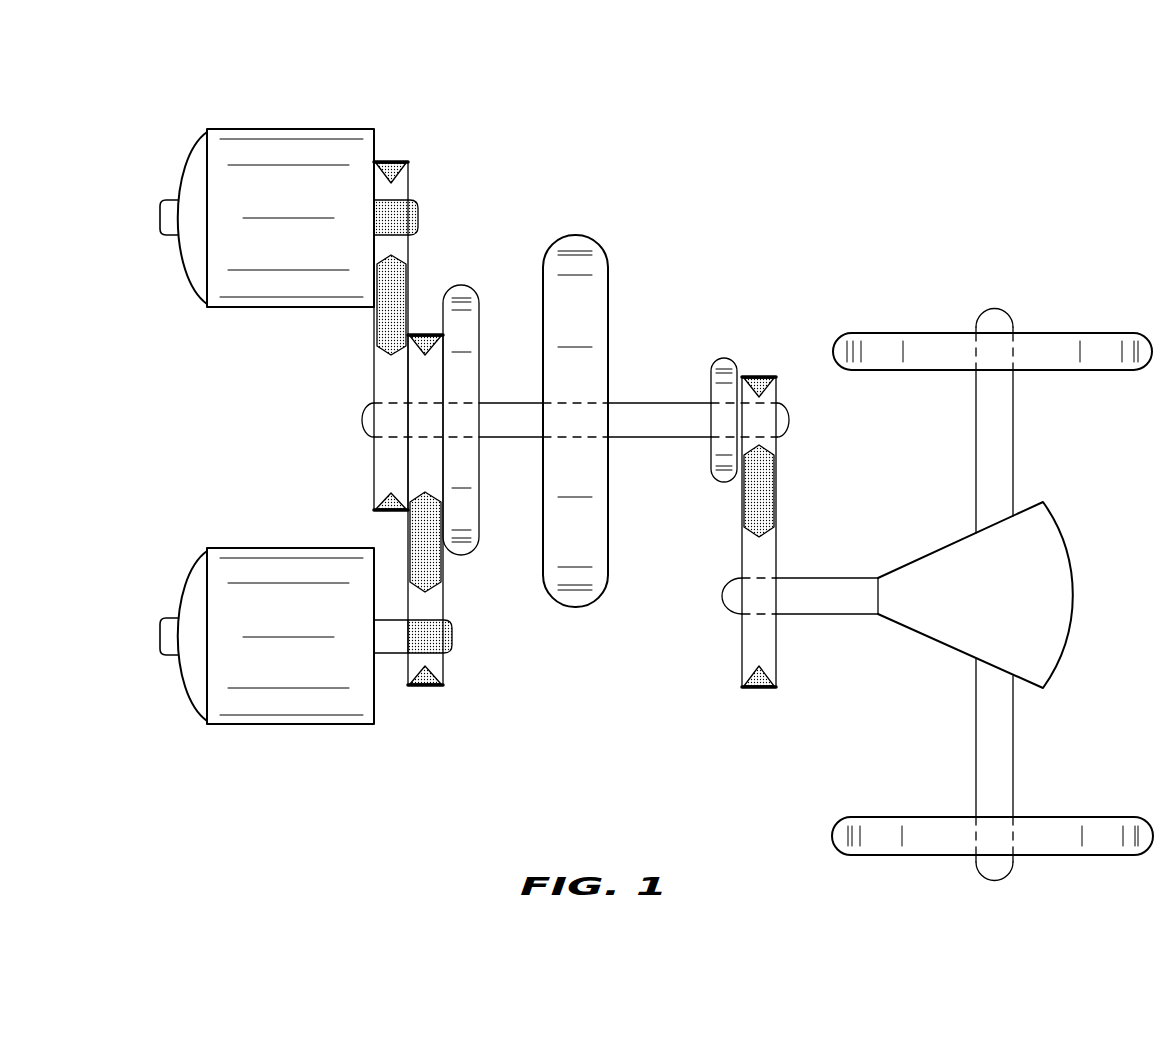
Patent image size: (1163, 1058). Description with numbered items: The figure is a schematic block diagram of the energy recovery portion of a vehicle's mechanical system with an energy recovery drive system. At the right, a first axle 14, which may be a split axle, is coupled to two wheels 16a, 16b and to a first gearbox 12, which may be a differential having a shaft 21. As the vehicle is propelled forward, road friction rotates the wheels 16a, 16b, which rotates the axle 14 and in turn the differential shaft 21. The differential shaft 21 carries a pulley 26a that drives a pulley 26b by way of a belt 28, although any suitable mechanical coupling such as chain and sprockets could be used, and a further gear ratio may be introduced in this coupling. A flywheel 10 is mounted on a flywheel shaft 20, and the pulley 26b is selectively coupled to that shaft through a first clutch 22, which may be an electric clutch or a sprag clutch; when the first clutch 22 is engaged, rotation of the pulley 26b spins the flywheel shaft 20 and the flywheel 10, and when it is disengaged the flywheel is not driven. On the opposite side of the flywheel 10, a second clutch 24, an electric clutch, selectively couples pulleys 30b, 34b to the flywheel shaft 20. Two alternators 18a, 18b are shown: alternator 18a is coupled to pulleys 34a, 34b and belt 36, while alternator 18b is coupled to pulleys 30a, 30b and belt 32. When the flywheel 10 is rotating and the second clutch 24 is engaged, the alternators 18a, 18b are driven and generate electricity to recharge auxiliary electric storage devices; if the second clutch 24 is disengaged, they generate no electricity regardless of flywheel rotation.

The flywheel 10 is at (605, 251).
The first gearbox 12 is at (1060, 593).
The first axle 14 is at (1013, 435).
The wheel 16a is at (1068, 337).
The wheel 16b is at (1070, 817).
The alternator 18a is at (273, 128).
The alternator 18b is at (322, 724).
The flywheel shaft 20 is at (642, 403).
The differential shaft 21 is at (830, 607).
The first clutch 22 is at (712, 478).
The second clutch 24 is at (470, 290).
The pulley 26a is at (747, 648).
The pulley 26b is at (773, 445).
The belt 28 is at (770, 497).
The pulley 30a is at (410, 665).
The pulley 30b is at (425, 365).
The belt 32 is at (415, 537).
The pulley 34a is at (407, 175).
The pulley 34b is at (383, 457).
The belt 36 is at (385, 323).